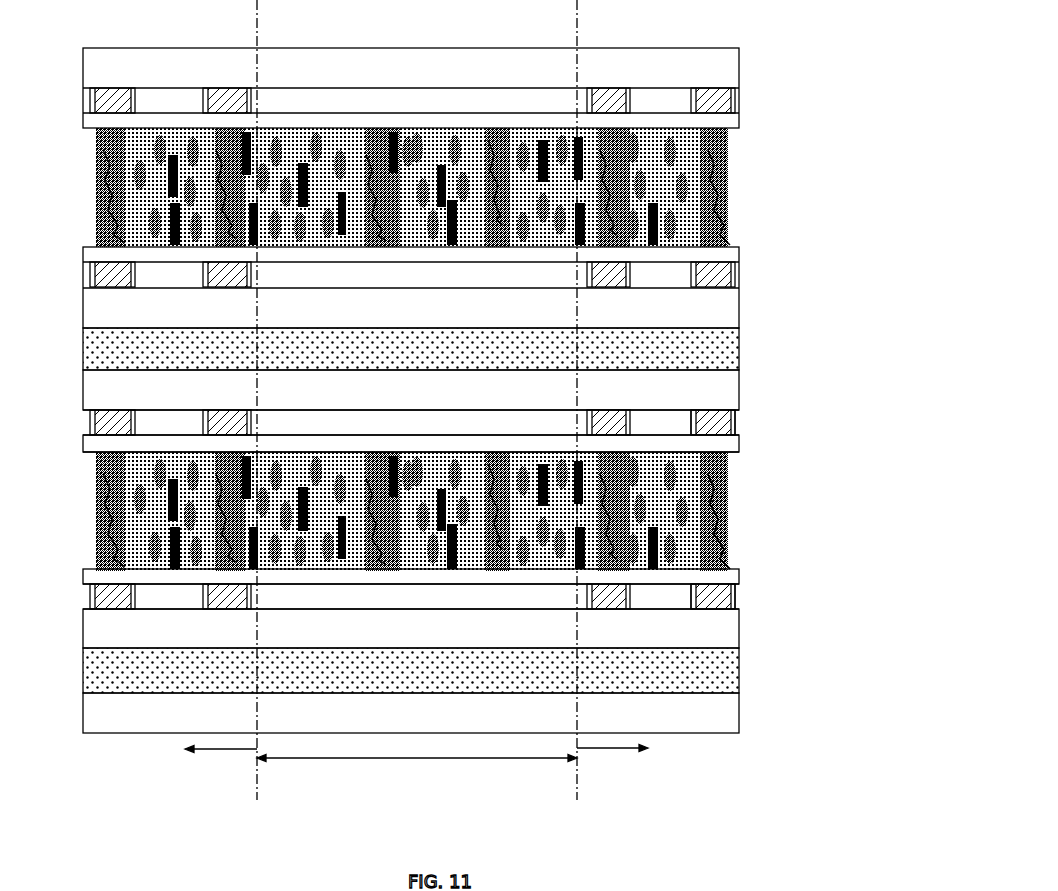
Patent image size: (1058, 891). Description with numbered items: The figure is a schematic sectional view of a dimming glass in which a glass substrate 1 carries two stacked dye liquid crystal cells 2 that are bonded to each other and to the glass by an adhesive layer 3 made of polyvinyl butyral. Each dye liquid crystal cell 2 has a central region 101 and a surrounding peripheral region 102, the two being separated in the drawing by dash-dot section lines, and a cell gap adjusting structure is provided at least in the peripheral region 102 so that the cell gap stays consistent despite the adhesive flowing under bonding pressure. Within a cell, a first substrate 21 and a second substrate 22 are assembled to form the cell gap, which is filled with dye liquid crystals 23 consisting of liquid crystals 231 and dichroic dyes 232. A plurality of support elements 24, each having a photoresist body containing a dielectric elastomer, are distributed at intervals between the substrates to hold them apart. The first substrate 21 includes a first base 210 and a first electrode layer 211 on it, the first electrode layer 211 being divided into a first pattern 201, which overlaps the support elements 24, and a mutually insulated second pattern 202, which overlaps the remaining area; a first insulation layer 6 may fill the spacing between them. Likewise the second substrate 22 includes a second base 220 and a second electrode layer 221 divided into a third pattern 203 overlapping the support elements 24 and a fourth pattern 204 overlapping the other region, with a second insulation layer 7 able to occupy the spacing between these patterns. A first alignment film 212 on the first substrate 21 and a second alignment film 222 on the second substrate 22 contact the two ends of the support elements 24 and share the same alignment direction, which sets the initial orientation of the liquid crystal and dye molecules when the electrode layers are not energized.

The glass substrate 1 is at (720, 718).
The dye liquid crystal cell 2 is at (78, 43).
The adhesive layer 3 is at (740, 349).
The first insulation layer 6 is at (737, 580).
The second insulation layer 7 is at (737, 450).
The first substrate 21 is at (488, 601).
The second substrate 22 is at (471, 414).
The dye liquid crystals 23 is at (465, 511).
The support element 24 is at (720, 515).
The central region 101 is at (417, 769).
The peripheral region 102 is at (417, 749).
The first pattern 201 is at (737, 606).
The second pattern 202 is at (737, 588).
The third pattern 203 is at (737, 421).
The fourth pattern 204 is at (737, 412).
The first base 210 is at (722, 628).
The first electrode layer 211 is at (507, 593).
The first alignment film 212 is at (727, 577).
The second base 220 is at (733, 392).
The second electrode layer 221 is at (489, 411).
The second alignment film 222 is at (735, 446).
The liquid crystals 231 is at (668, 477).
The dichroic dyes 232 is at (657, 550).